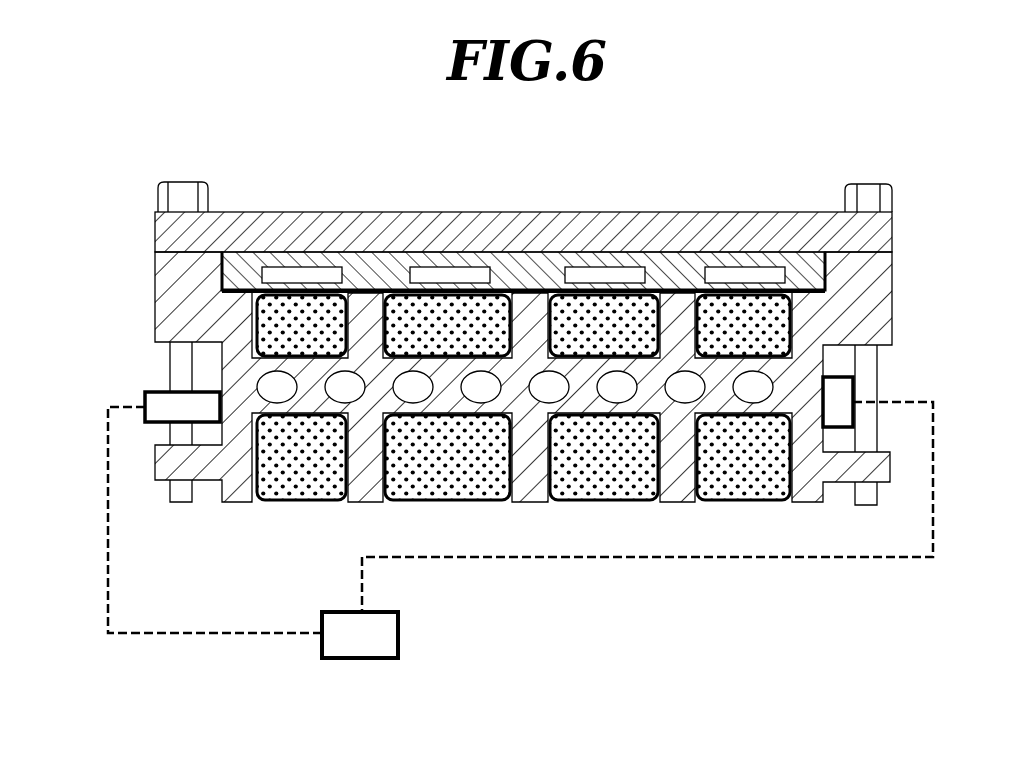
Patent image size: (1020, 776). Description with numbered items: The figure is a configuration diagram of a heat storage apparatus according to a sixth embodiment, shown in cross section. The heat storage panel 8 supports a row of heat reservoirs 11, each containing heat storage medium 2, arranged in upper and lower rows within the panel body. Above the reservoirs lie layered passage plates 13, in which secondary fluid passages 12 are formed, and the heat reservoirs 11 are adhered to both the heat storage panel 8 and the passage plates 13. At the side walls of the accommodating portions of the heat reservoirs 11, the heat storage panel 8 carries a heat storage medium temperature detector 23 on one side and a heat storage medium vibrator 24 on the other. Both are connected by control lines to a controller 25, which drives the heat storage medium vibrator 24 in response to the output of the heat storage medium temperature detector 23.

The heat storage panel 8 is at (155, 280).
The passage plates 13 is at (520, 263).
The secondary fluid passages 12 is at (607, 273).
The heat reservoirs 11 is at (738, 283).
The heat storage medium 2 is at (430, 293).
The heat storage medium vibrator 24 is at (152, 392).
The heat storage medium temperature detector 23 is at (845, 392).
The controller 25 is at (398, 633).